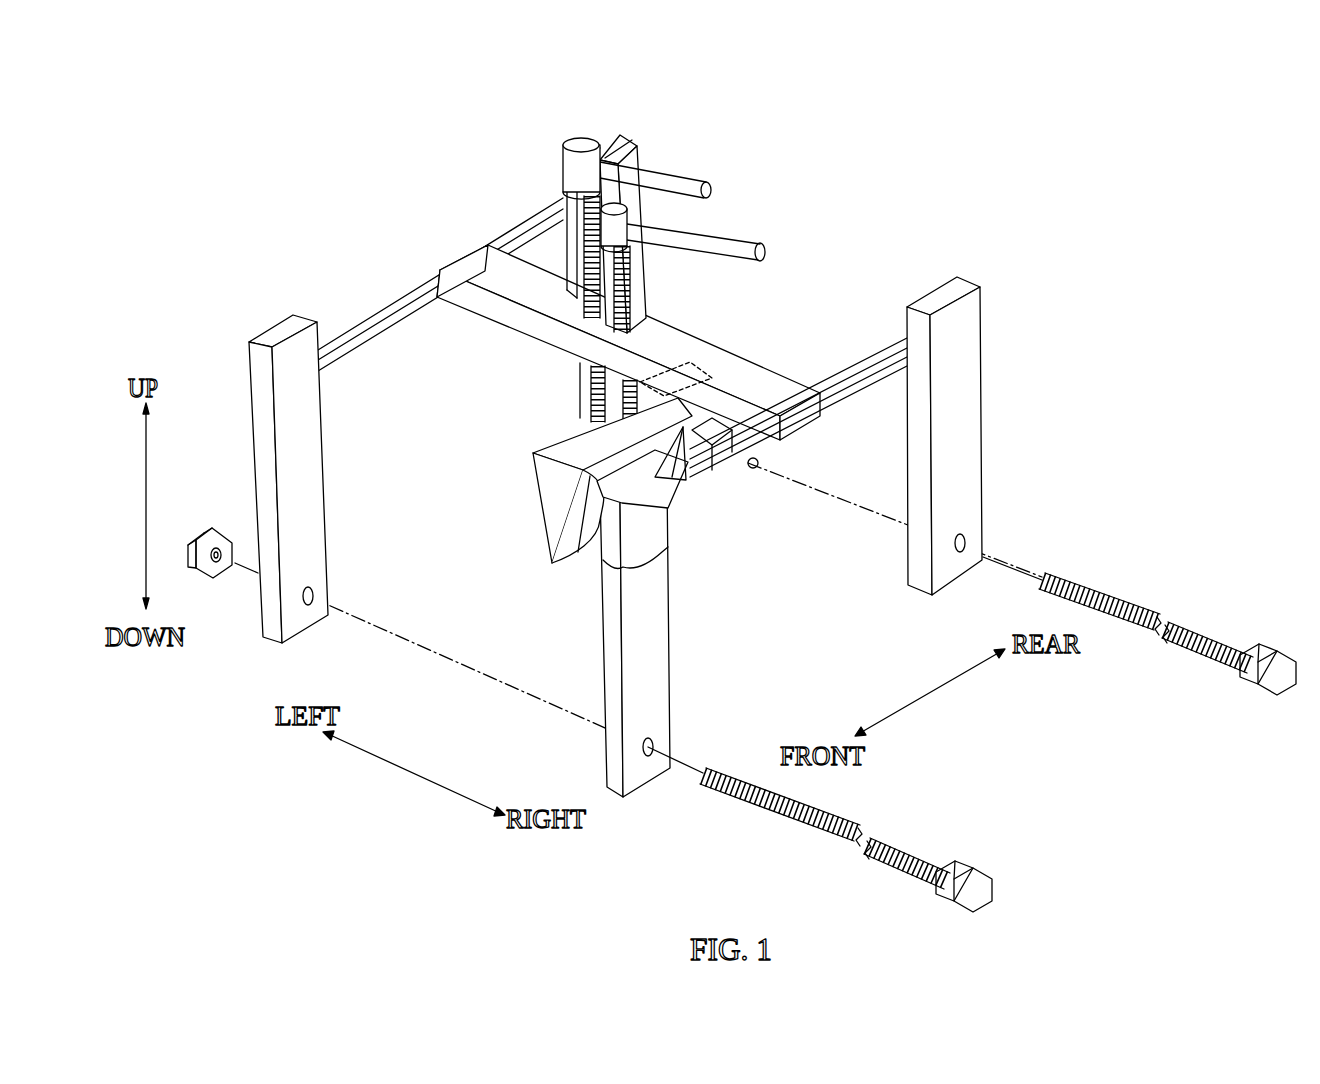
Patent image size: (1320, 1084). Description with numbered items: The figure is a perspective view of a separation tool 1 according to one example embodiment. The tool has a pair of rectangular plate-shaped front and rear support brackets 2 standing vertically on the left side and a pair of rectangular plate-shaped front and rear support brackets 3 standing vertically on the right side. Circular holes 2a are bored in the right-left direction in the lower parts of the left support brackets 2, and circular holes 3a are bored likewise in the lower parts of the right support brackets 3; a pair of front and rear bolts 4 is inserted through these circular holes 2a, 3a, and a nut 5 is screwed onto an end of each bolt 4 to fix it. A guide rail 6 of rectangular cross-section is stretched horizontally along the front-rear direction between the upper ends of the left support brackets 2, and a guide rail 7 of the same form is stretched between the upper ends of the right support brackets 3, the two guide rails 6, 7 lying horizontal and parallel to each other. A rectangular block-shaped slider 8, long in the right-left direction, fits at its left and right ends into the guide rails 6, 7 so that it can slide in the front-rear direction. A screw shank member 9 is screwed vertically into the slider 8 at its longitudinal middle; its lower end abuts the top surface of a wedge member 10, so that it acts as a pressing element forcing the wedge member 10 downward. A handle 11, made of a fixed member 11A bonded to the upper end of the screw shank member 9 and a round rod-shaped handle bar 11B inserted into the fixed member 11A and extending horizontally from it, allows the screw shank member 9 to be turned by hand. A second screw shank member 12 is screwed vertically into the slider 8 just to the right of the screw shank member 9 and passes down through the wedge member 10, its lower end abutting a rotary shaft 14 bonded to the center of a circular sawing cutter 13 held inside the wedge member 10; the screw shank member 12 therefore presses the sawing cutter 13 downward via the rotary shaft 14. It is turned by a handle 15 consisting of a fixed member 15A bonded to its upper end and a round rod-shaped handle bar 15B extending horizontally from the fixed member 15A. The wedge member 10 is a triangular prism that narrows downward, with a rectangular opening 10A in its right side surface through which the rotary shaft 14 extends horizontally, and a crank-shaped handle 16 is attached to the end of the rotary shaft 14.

The separation tool 1 is at (762, 126).
The front and rear support brackets 2 is at (313, 526).
The circular holes 2a is at (312, 592).
The front and rear support brackets 3 is at (970, 409).
The circular holes 3a is at (964, 540).
The front and rear bolts 4 is at (976, 874).
The nut 5 is at (204, 530).
The guide rail 6 is at (386, 304).
The guide rail 7 is at (858, 366).
The slider 8 is at (748, 368).
The screw shank member 9 is at (566, 262).
The wedge member 10 is at (607, 499).
The rectangular opening 10A is at (574, 562).
The handle 11 is at (645, 208).
The fixed member 11A is at (580, 142).
The round rod-shaped handle bar 11B is at (704, 180).
The screw shank member 12 is at (648, 286).
The circular sawing cutter 13 is at (652, 494).
The rotary shaft 14 is at (676, 410).
The handle 15 is at (683, 252).
The fixed member 15A is at (640, 258).
The round rod-shaped handle bar 15B is at (662, 234).
The handle 16 is at (722, 430).